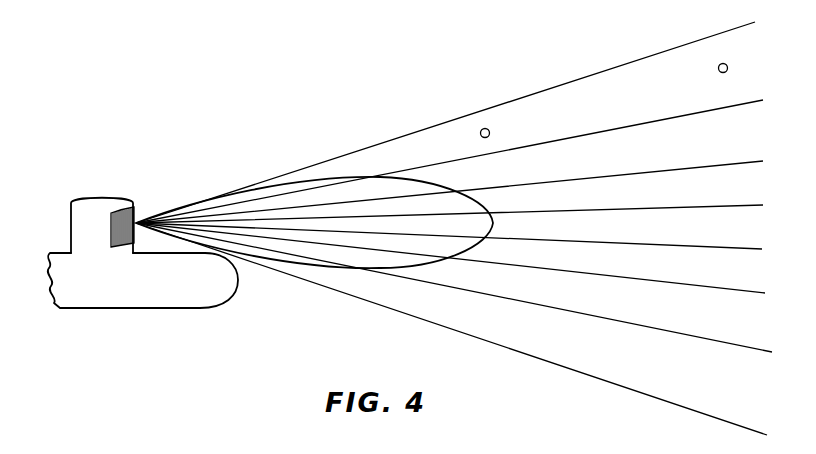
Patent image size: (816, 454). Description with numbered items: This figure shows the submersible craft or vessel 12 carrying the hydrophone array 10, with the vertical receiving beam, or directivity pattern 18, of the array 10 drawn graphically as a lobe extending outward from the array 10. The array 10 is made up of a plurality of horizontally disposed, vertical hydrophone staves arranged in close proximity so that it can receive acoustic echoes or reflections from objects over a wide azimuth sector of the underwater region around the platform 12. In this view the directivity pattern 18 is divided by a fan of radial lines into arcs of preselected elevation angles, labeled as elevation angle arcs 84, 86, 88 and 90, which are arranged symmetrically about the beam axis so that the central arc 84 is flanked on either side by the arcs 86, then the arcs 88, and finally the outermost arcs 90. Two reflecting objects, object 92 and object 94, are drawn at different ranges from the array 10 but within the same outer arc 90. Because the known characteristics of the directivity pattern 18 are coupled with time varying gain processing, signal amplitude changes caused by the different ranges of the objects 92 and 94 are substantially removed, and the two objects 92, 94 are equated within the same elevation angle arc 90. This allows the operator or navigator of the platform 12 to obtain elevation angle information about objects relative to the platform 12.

The hydrophone array 10 is at (137, 217).
The submersible craft or vessel 12 is at (78, 183).
The directivity pattern 18 is at (300, 183).
The elevation angle arc 84 is at (706, 238).
The elevation angle arc 86 is at (686, 203).
The elevation angle arc 88 is at (711, 150).
The elevation angle arc 90 is at (663, 101).
The object 92 is at (490, 132).
The object 94 is at (727, 66).